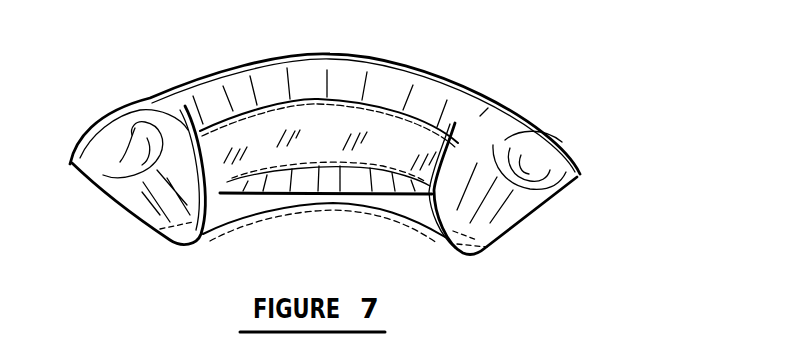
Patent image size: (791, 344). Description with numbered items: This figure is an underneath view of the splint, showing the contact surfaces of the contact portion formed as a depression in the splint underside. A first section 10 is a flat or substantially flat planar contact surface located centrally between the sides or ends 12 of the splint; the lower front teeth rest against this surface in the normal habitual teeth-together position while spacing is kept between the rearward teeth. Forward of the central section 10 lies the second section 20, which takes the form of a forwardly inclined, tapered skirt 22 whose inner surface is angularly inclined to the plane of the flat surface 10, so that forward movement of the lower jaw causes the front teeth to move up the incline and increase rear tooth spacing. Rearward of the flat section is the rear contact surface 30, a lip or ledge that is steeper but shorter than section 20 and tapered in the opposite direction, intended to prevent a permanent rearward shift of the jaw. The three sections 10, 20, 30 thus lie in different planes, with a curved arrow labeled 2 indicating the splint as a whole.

The neck support device 2 is at (355, 141).
The first section 10 is at (330, 133).
The sides or ends of the splint 12 is at (155, 195).
The second section 20 is at (363, 86).
The skirt 22 is at (242, 65).
The rear contact surface 30 is at (340, 186).